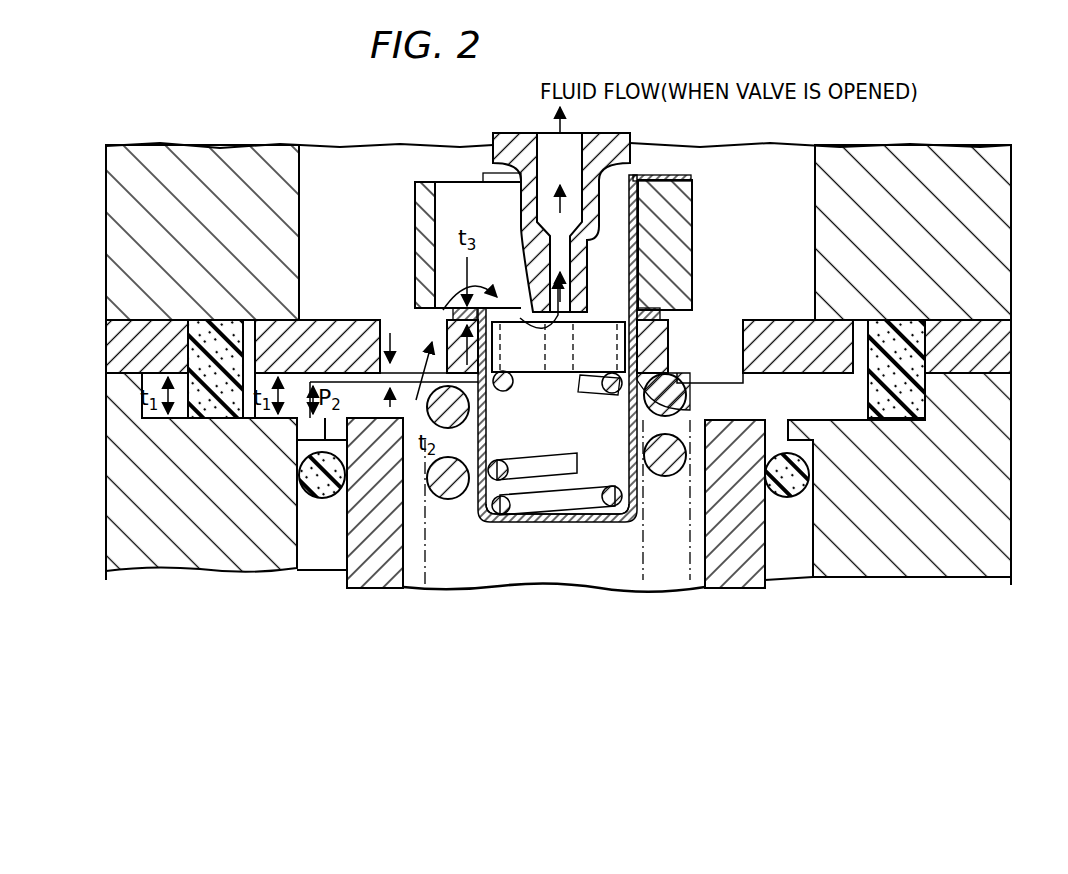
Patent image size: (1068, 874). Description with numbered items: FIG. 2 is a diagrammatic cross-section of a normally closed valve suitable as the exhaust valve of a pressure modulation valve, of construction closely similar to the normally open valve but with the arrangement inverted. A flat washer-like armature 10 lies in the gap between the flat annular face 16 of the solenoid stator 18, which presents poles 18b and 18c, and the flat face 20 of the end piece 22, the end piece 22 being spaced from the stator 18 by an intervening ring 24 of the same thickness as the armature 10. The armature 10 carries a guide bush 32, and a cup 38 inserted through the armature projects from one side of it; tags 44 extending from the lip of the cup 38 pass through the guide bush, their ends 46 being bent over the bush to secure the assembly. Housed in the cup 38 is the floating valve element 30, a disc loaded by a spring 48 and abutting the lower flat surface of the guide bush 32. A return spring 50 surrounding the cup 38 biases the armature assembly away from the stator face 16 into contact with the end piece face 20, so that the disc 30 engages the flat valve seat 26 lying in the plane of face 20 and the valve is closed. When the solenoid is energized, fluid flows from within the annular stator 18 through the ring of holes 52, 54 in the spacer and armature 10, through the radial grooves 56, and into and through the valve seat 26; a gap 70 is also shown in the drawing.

The armature 10 is at (755, 328).
The flat annular face of solenoid stator 16 is at (832, 418).
The solenoid stator 18 is at (915, 568).
The pole 18b is at (380, 578).
The pole 18c is at (292, 568).
The flat face of end piece 20 is at (143, 327).
The end piece 22 is at (225, 148).
The intervening ring 24 is at (112, 333).
The valve seat 26 is at (628, 146).
The floating valve element 30 is at (533, 370).
The guide bush 32 is at (680, 265).
The cup 38 is at (575, 522).
The tags 44 is at (650, 228).
The ends of tags 46 is at (690, 174).
The spring 48 is at (612, 522).
The return spring 50 is at (455, 500).
The holes 52 is at (383, 325).
The holes 54 is at (412, 377).
The radial grooves 56 is at (436, 205).
The gap 70 is at (213, 322).